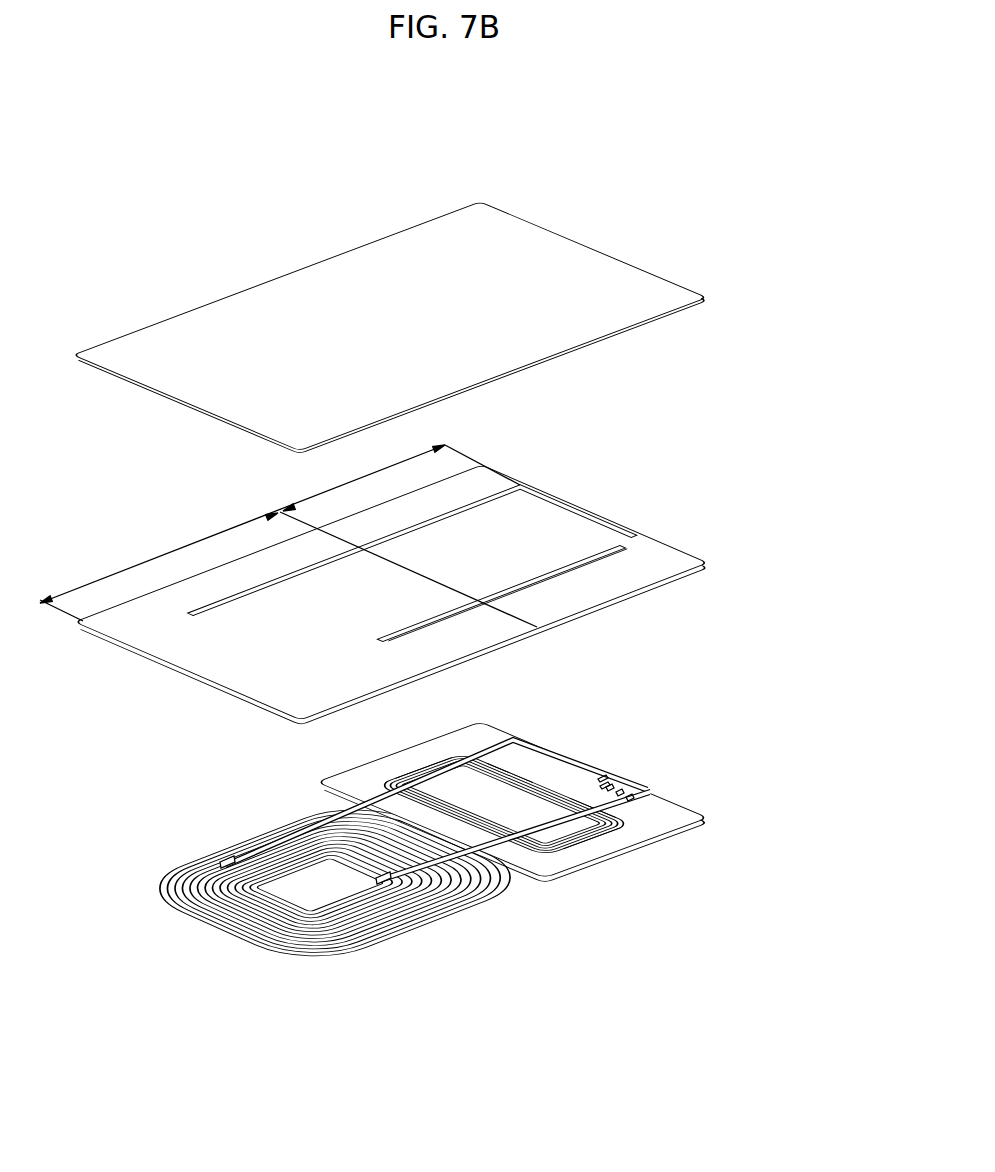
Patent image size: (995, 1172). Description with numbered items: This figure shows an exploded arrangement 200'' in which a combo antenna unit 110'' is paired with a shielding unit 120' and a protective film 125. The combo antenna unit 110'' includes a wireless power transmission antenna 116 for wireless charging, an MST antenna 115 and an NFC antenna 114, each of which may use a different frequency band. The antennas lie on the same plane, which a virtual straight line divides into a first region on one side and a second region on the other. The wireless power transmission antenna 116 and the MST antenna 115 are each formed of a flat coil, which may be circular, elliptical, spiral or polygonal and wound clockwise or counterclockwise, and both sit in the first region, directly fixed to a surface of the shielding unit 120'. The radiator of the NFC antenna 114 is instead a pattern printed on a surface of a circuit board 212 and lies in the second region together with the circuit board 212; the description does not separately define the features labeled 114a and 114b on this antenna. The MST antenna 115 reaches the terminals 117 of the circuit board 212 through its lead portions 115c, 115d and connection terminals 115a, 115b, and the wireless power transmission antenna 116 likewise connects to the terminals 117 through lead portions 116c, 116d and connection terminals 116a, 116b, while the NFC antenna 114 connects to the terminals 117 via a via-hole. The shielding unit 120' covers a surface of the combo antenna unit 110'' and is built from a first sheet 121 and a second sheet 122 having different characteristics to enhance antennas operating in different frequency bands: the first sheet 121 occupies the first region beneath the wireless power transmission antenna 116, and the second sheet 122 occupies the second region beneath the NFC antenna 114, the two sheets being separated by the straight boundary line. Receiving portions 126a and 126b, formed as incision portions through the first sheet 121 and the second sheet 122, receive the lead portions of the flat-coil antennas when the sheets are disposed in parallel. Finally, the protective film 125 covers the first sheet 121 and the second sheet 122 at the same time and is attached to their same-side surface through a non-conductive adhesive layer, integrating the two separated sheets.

The wireless power transmission module 200'' is at (449, 569).
The protective film 125 is at (613, 261).
The shielding unit 120' is at (402, 581).
The first sheet 121 is at (257, 688).
The second sheet 122 is at (573, 603).
The receiving portion 126a is at (483, 500).
The receiving portion 126b is at (587, 565).
The combo antenna unit 110'' is at (493, 832).
The NFC antenna 114 is at (563, 864).
The opening of circuit board 114a is at (507, 748).
The board edge portion 114b is at (577, 758).
The MST antenna 115 is at (383, 928).
The connection terminal 115a is at (643, 789).
The connection terminal 115b is at (693, 830).
The lead portion 115c is at (467, 747).
The lead portion 115d is at (571, 868).
The wireless power transmission antenna 116 is at (258, 910).
The connection terminal 116a is at (603, 777).
The connection terminal 116b is at (605, 787).
The lead portion 116c is at (237, 842).
The lead portion 116d is at (450, 863).
The terminals 117 is at (650, 795).
The circuit board 212 is at (650, 838).